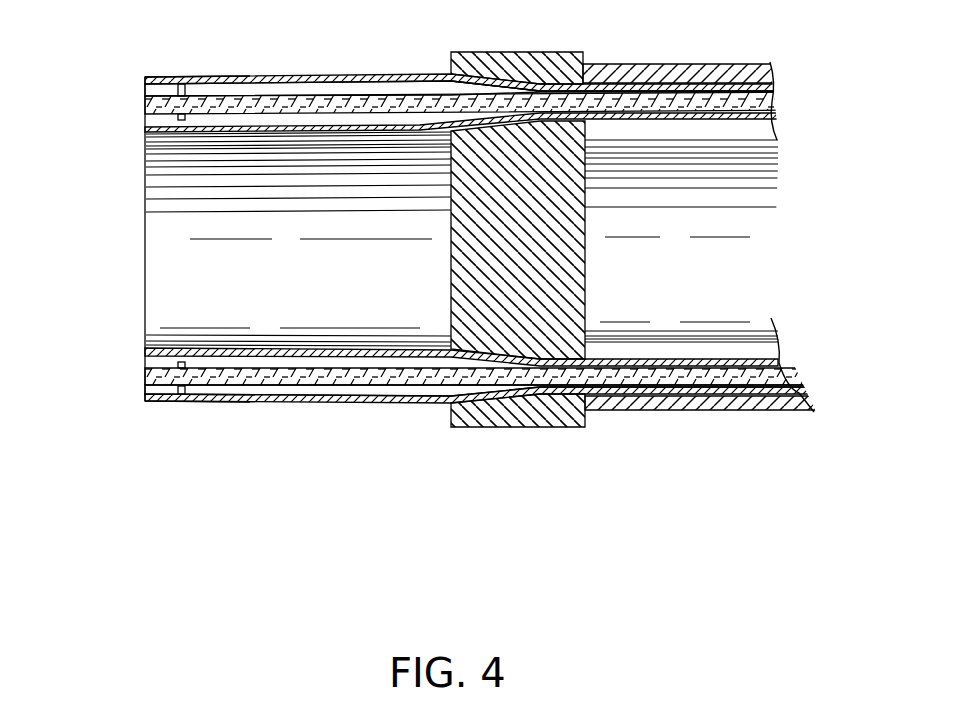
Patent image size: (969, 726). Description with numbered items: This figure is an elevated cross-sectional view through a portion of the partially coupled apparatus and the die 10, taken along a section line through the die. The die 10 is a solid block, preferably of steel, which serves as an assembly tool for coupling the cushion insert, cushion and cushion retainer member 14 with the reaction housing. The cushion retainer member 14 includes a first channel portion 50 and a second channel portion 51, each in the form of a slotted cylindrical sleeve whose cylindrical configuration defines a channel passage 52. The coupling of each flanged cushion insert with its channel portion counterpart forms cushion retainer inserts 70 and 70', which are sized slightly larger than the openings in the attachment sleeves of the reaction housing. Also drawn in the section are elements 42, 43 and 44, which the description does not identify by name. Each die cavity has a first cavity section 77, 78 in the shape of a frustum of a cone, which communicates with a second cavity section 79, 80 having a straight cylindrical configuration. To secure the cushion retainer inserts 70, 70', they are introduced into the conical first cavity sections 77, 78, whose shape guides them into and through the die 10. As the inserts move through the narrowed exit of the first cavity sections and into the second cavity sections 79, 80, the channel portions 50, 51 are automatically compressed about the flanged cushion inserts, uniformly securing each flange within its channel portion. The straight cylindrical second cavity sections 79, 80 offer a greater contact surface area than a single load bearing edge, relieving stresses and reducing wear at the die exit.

The die 10 is at (515, 436).
The cushion retainer member 14 is at (140, 285).
The inner tube 42 is at (398, 100).
The junction of outer layer 43 is at (536, 85).
The retaining tabs 44 is at (178, 85).
The first channel portion 50 is at (343, 75).
The second channel portion 51 is at (283, 402).
The channel passage 52 is at (270, 87).
The cushion retainer insert 70 is at (197, 48).
The cushion retainer insert 70' is at (187, 435).
The first cavity section 77 is at (480, 53).
The first cavity section 78 is at (475, 403).
The second cavity section 79 is at (600, 80).
The second cavity section 80 is at (570, 390).